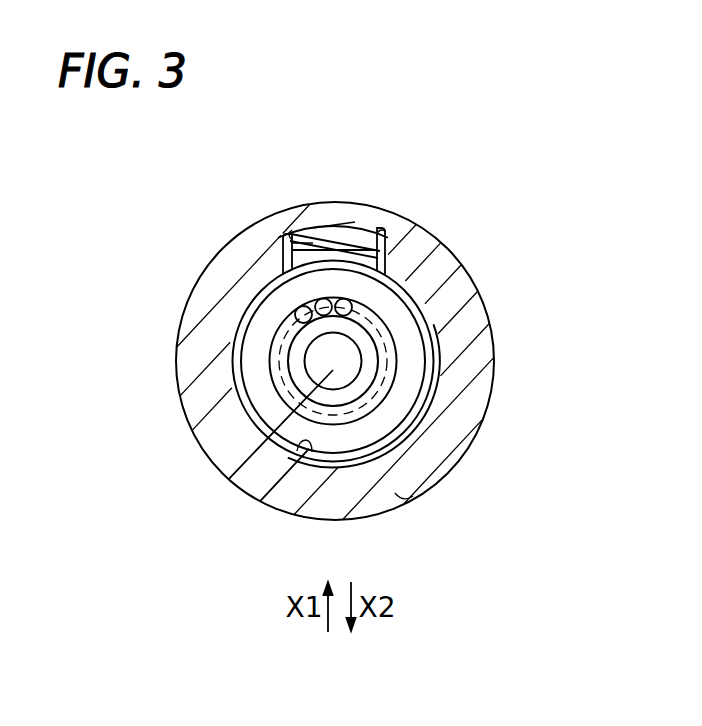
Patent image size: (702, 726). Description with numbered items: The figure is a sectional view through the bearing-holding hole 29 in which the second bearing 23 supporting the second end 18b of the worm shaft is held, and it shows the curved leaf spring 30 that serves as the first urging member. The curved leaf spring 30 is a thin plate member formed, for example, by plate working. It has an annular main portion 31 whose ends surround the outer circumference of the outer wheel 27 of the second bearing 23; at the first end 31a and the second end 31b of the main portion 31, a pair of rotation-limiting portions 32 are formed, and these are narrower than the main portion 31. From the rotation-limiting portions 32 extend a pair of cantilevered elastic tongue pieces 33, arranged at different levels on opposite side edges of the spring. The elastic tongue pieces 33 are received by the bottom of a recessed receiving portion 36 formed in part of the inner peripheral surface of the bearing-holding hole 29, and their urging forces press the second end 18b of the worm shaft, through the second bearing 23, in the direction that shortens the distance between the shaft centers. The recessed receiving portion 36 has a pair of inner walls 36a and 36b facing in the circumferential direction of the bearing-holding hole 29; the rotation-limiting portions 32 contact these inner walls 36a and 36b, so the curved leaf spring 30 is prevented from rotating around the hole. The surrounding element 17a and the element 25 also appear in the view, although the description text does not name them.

The housing wall 17a is at (490, 348).
The second end of the worm shaft 18b is at (275, 494).
The second bearing 23 is at (441, 321).
The bearing 25 is at (368, 378).
The outer wheel 27 is at (414, 478).
The bearing-holding hole 29 is at (304, 452).
The curved leaf spring 30 is at (428, 440).
The main portion 31 is at (257, 415).
The first end 31a is at (398, 272).
The second end 31b is at (278, 273).
The rotation-limiting portions 32 is at (273, 277).
The elastic tongue pieces 33 is at (297, 232).
The recessed receiving portion 36 is at (322, 232).
The inner wall 36a is at (378, 238).
The inner wall 36b is at (298, 232).